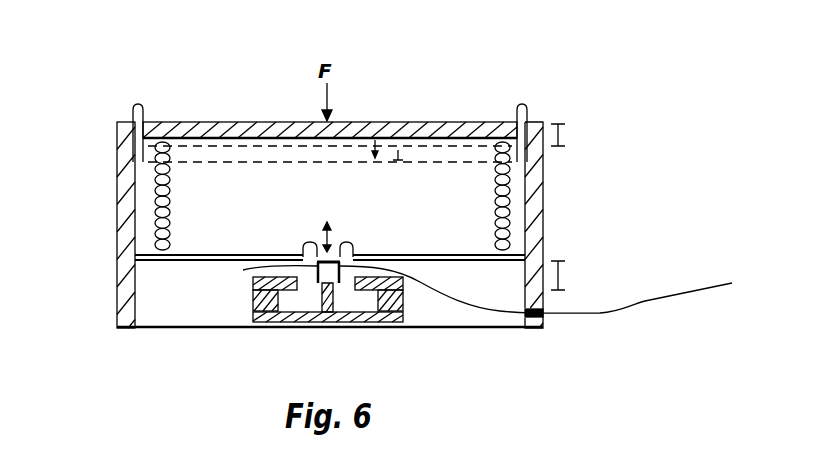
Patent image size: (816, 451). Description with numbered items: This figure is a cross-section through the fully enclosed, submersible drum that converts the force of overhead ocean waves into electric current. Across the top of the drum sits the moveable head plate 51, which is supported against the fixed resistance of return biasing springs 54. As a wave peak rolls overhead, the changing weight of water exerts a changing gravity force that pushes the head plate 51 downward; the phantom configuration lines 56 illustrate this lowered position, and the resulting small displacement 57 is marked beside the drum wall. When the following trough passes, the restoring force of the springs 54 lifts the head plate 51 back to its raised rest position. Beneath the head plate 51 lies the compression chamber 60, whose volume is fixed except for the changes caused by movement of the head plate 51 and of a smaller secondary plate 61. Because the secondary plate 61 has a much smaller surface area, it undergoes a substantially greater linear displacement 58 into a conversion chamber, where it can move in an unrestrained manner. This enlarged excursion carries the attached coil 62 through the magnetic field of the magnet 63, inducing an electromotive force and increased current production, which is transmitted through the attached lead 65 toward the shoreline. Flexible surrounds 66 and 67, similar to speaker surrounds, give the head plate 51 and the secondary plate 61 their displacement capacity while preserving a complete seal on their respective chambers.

The head plate 51 is at (447, 128).
The springs 54 is at (160, 227).
The phantom configuration lines 56 is at (383, 118).
The displacement 57 is at (563, 135).
The increased displacement 58 is at (565, 282).
The compression chamber 60 is at (198, 195).
The secondary plate 61 is at (255, 269).
The coil 62 is at (403, 270).
The magnet 63 is at (373, 318).
The lead 65 is at (647, 302).
The flexible surround 66 is at (138, 100).
The flexible surround 67 is at (307, 241).